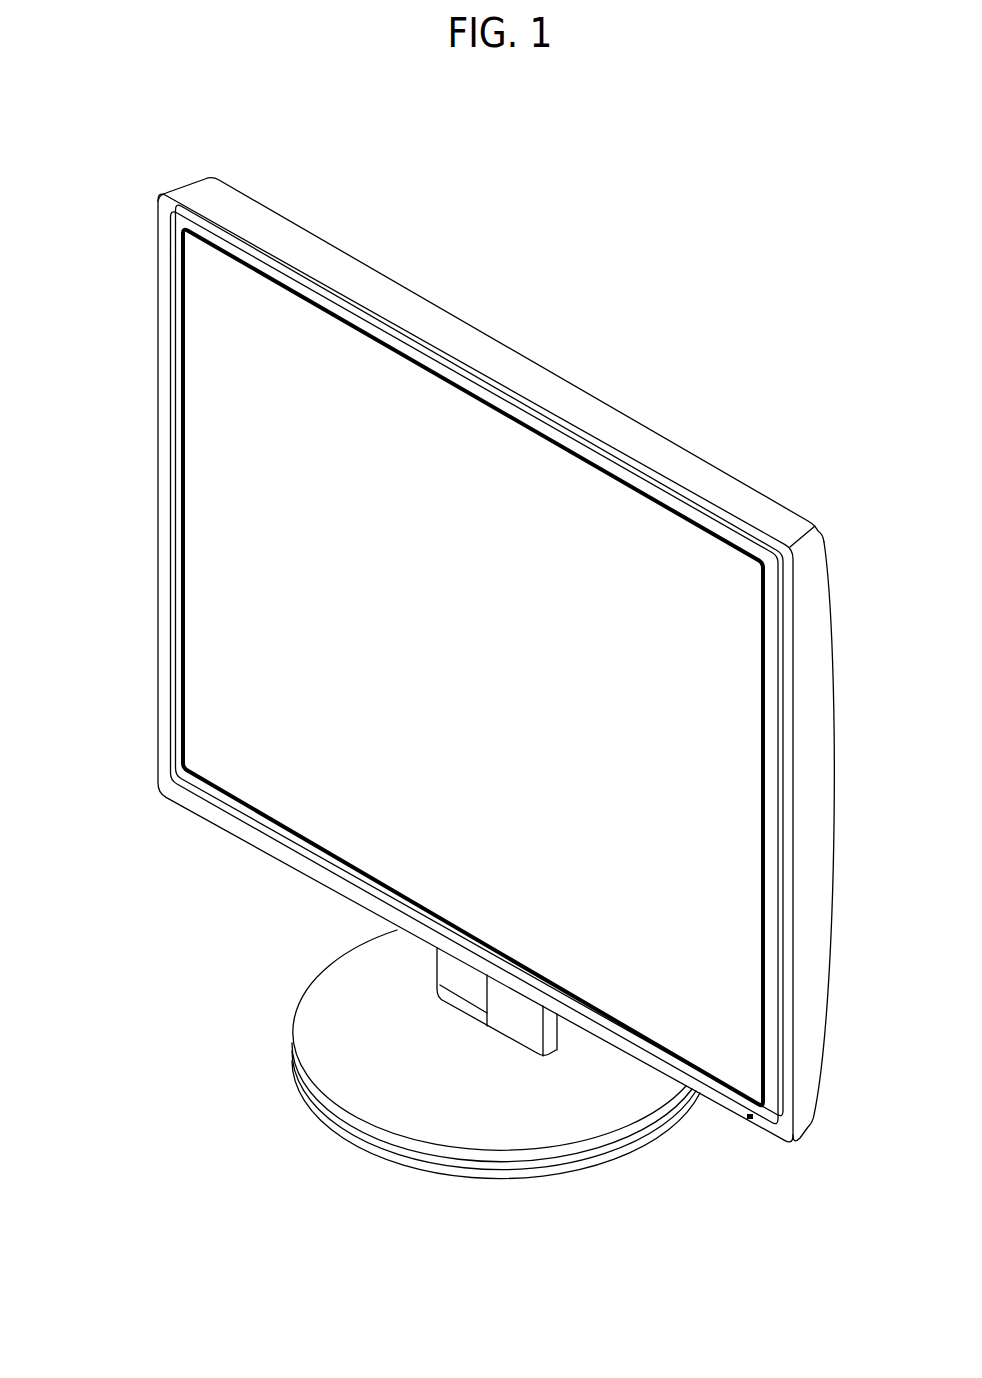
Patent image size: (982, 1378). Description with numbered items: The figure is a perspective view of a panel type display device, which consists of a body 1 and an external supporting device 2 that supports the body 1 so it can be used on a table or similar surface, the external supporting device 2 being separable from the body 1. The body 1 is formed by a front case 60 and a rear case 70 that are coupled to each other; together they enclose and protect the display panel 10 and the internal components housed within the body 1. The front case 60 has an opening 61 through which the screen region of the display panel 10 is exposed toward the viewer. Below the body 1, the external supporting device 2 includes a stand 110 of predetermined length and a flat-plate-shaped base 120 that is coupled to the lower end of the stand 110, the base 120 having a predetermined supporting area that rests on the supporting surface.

The body 1 is at (449, 657).
The external supporting device 2 is at (432, 1042).
The display panel 10 is at (197, 298).
The front case 60 is at (163, 472).
The opening 61 is at (214, 712).
The rear case 70 is at (352, 257).
The stand 110 is at (513, 1007).
The base 120 is at (363, 1103).